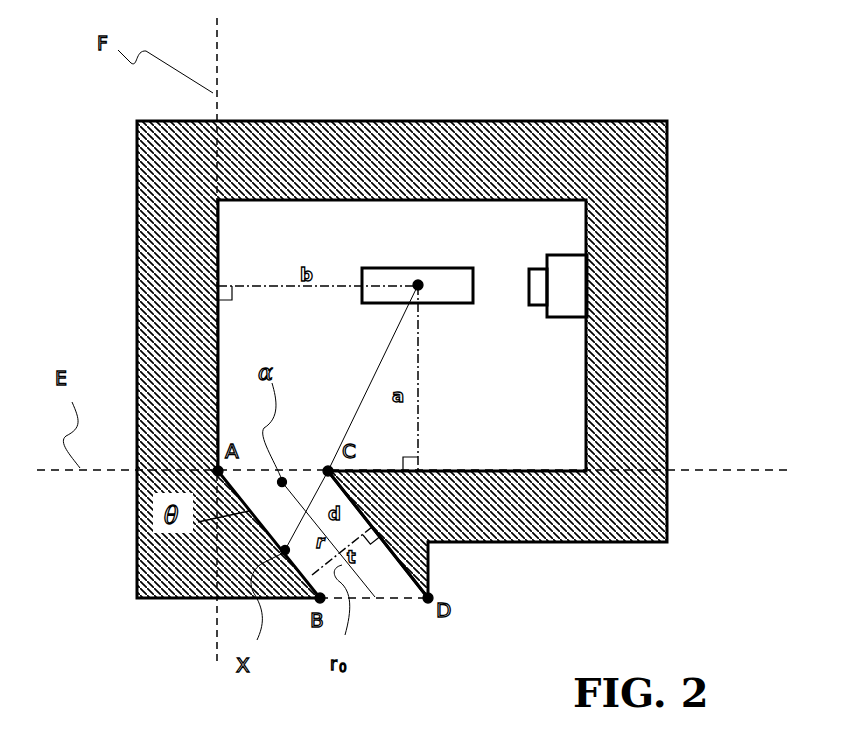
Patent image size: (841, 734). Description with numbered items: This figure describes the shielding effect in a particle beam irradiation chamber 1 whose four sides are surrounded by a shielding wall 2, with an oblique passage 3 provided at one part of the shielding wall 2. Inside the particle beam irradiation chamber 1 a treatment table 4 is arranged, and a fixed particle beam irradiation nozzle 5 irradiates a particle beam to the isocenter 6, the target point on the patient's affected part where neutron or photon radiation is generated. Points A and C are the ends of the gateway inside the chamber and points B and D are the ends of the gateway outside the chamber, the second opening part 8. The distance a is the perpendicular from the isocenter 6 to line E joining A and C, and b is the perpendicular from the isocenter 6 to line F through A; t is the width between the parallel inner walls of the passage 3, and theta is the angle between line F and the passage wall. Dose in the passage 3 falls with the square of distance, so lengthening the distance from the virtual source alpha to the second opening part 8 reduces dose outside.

The particle beam irradiation chamber 1 is at (488, 101).
The shielding wall 2 is at (288, 120).
The passage 3 is at (383, 573).
The treatment table 4 is at (447, 275).
The particle beam irradiation nozzle 5 is at (570, 283).
The isocenter 6 is at (418, 285).
The second opening part 8 is at (400, 600).